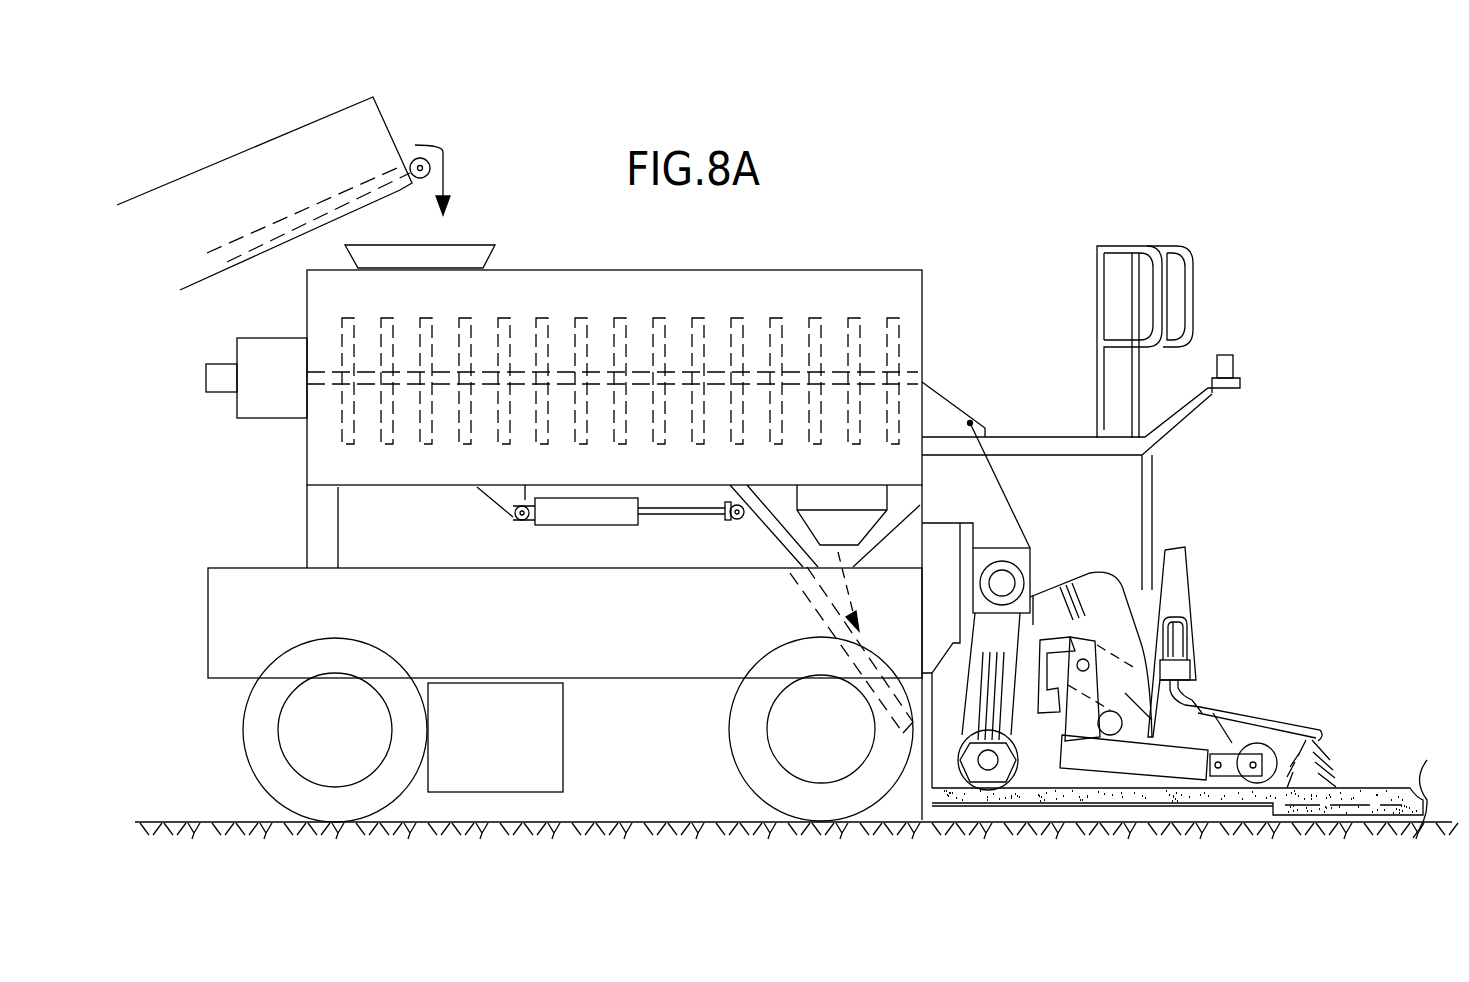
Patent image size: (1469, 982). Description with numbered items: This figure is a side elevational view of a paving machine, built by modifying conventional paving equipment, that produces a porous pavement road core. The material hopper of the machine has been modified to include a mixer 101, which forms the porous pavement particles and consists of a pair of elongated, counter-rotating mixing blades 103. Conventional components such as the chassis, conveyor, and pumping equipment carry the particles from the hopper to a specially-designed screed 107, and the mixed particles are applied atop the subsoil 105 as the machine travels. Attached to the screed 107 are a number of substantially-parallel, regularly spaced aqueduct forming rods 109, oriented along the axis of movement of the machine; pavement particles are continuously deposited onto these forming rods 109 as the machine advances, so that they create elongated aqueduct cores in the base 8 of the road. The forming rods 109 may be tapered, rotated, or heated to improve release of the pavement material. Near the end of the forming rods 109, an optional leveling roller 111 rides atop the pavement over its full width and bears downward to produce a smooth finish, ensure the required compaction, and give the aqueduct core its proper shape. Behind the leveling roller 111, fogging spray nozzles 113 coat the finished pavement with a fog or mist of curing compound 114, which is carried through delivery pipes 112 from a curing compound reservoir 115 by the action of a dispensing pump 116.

The mixer 101 is at (540, 320).
The mixing blades 103 is at (700, 318).
The subsoil 105 is at (523, 827).
The screed 107 is at (1193, 602).
The aqueduct forming rods 109 is at (985, 810).
The leveling roller 111 is at (1273, 740).
The delivery pipes 112 is at (1235, 708).
The fogging spray nozzles 113 is at (1335, 750).
The curing compound 114 is at (1337, 747).
The curing compound reservoir 115 is at (1183, 677).
The dispensing pump 116 is at (1180, 633).
The base 8 is at (1357, 787).